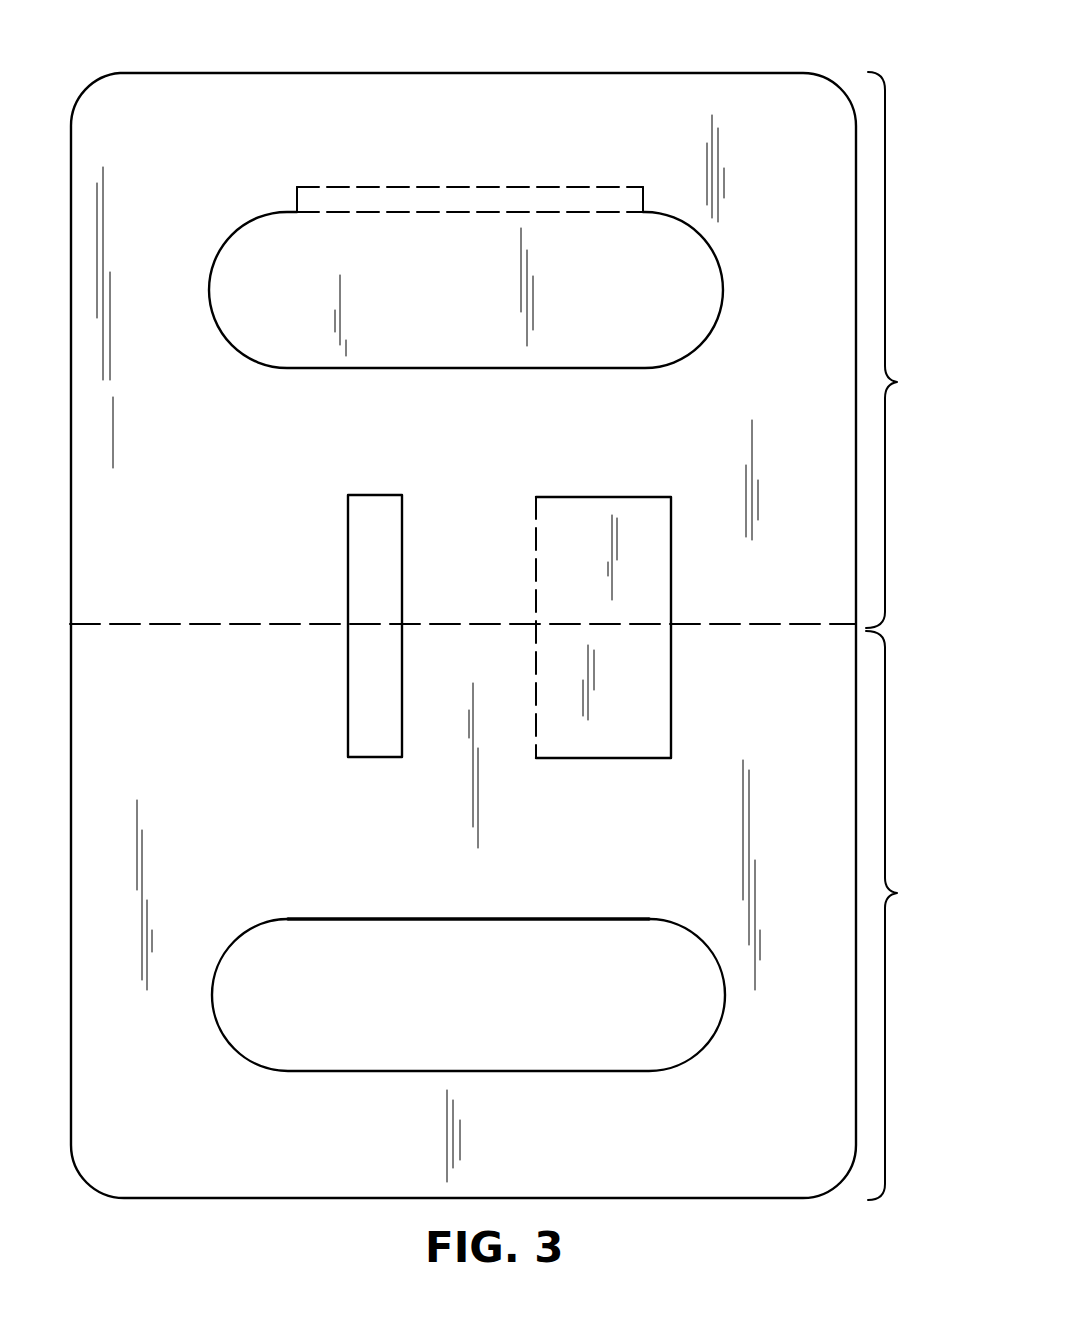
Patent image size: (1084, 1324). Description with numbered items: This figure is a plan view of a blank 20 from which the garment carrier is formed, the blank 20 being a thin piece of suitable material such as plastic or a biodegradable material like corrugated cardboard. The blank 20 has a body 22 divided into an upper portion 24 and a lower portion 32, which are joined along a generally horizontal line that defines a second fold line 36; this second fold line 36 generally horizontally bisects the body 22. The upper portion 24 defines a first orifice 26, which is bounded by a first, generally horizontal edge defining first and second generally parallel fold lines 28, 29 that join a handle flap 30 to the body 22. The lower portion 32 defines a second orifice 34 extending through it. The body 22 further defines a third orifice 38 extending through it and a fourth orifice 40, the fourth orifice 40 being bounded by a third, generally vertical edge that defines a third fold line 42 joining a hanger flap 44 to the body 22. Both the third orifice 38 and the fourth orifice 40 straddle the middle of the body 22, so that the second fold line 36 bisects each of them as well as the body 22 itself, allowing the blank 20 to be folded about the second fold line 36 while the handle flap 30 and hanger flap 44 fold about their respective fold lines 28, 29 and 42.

The blank 20 is at (652, 56).
The body 22 is at (189, 523).
The upper portion 24 is at (901, 350).
The first orifice 26 is at (712, 262).
The first fold line 28 is at (481, 211).
The second fold line 29 is at (378, 187).
The handle flap 30 is at (440, 300).
The lower portion 32 is at (903, 915).
The second orifice 34 is at (446, 997).
The second fold line 36 is at (693, 626).
The third orifice 38 is at (390, 611).
The fourth orifice 40 is at (637, 497).
The third fold line 42 is at (532, 552).
The hanger flap 44 is at (591, 569).